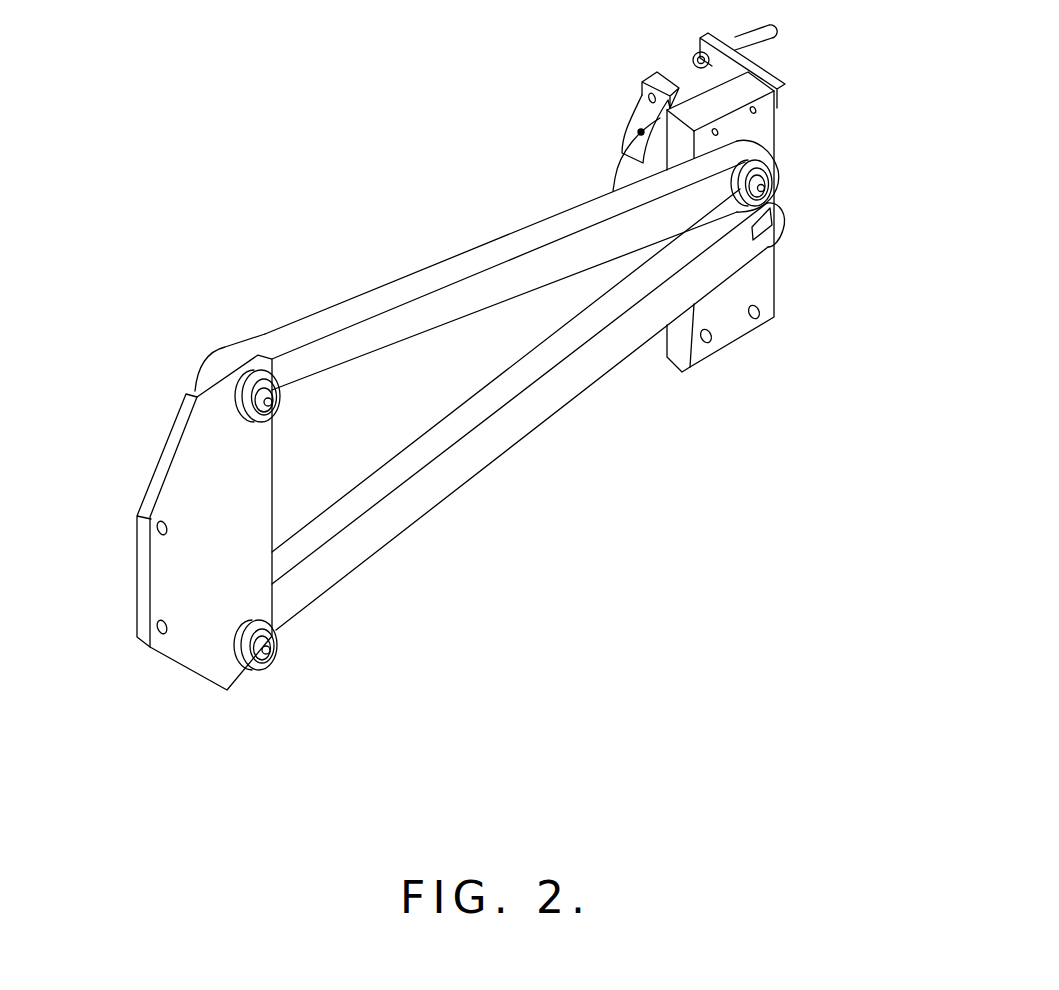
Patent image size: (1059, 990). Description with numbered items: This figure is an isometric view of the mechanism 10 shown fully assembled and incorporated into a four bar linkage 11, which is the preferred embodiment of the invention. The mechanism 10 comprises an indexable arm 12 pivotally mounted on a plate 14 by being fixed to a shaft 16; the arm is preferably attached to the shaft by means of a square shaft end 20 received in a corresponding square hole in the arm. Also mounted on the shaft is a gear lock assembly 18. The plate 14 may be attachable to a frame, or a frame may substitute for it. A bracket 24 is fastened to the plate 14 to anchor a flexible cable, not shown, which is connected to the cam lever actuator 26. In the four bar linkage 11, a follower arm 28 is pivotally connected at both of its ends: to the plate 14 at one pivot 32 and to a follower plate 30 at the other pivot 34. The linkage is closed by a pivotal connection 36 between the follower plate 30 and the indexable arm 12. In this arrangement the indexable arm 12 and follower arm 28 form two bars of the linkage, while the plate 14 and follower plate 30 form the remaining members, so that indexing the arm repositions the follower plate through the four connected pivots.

The mechanism 10 is at (476, 367).
The four bar linkage 11 is at (553, 385).
The indexable arm 12 is at (591, 409).
The plate 14 is at (750, 283).
The shaft 16 is at (770, 230).
The gear lock assembly 18 is at (617, 107).
The square shaft end 20 is at (773, 217).
The bracket 24 is at (765, 60).
The cam lever actuator 26 is at (652, 80).
The follower arm 28 is at (478, 253).
The follower plate 30 is at (163, 457).
The pivot 32 is at (772, 178).
The pivot 34 is at (257, 385).
The pivotal connection 36 is at (270, 657).